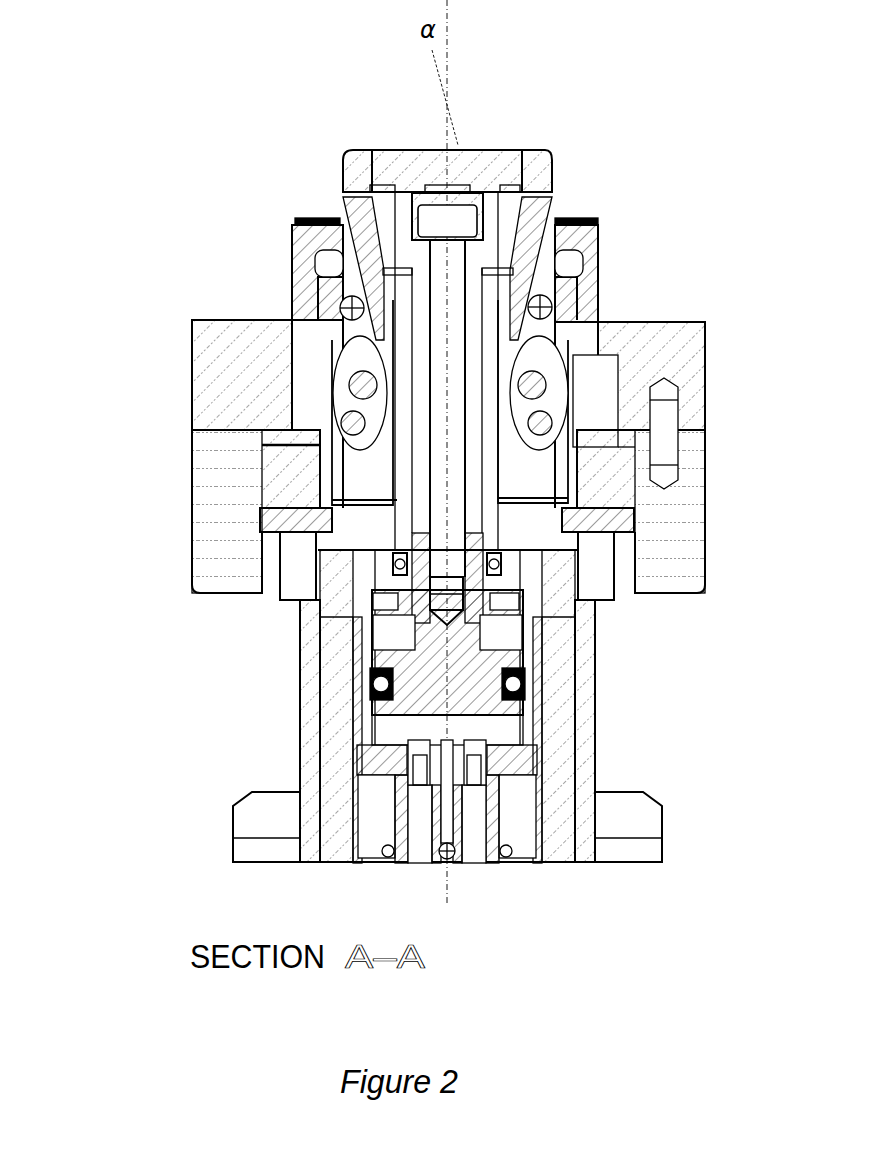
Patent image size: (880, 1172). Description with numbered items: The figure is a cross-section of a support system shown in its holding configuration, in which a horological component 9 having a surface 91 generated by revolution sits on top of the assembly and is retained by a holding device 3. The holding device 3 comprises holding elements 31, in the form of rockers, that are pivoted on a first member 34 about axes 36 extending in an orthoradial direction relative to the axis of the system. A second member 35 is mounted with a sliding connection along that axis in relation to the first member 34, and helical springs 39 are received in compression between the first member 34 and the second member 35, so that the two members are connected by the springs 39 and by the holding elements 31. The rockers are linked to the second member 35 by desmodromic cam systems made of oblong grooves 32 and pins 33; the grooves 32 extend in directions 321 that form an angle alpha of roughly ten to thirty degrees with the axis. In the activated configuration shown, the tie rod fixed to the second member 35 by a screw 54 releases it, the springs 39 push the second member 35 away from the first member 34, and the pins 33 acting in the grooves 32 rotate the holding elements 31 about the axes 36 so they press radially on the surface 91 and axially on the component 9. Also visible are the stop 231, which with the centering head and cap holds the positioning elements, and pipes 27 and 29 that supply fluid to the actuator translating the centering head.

The holding device 3 is at (300, 182).
The horological component 9 is at (598, 218).
The surface 91 is at (555, 215).
The holding elements 31 is at (600, 248).
The first member 34 is at (352, 308).
The axes 36 is at (365, 378).
The oblong grooves 32 is at (545, 390).
The pins 33 is at (560, 440).
The helical springs 39 is at (350, 430).
The second member 35 is at (320, 445).
The stop 231 is at (192, 453).
The screw 54 is at (318, 535).
The pipe 27 is at (420, 738).
The directions 321 is at (568, 525).
The pipe 29 is at (453, 858).